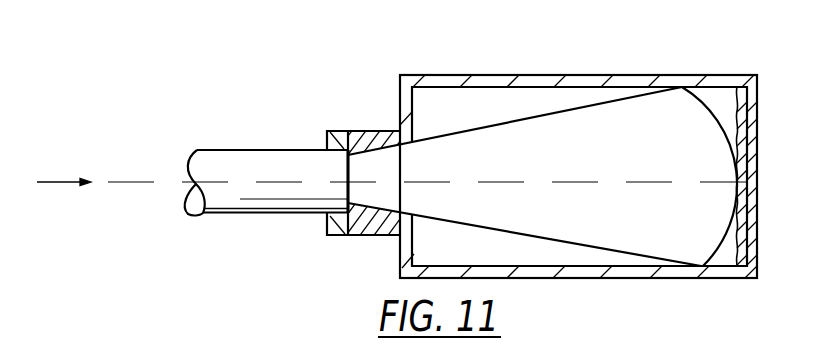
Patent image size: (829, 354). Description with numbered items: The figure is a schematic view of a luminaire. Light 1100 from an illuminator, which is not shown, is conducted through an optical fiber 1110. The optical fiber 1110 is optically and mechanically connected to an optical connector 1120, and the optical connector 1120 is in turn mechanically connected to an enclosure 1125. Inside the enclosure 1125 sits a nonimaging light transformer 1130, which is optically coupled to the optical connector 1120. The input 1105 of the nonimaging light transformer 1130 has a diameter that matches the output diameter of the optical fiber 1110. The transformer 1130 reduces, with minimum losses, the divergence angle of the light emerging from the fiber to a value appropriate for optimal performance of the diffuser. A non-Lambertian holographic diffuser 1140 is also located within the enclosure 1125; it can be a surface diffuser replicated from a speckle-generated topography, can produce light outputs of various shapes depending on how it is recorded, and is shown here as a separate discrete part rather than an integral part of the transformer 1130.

The light 1100 is at (96, 218).
The optical fiber 1110 is at (228, 157).
The input of nonimaging light transformer 1105 is at (346, 168).
The optical connector 1120 is at (368, 122).
The enclosure 1125 is at (487, 20).
The nonimaging light transformer 1130 is at (557, 104).
The non-Lambertian holographic diffuser 1140 is at (731, 100).